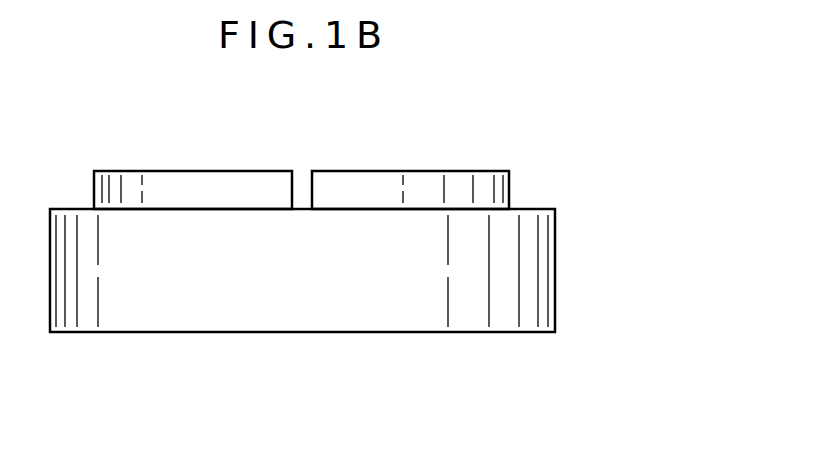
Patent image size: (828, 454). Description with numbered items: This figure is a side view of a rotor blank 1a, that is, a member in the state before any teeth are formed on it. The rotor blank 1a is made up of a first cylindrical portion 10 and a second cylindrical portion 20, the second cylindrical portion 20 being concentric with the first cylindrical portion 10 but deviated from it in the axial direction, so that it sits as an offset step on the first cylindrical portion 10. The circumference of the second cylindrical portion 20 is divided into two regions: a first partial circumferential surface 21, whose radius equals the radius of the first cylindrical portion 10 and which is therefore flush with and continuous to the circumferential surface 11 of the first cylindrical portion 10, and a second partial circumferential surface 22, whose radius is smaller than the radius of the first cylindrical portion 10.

The rotor blank 1a is at (606, 125).
The first cylindrical portion 10 is at (577, 279).
The circumferential surface 11 is at (502, 312).
The second cylindrical portion 20 is at (554, 192).
The first partial circumferential surface 21 is at (302, 188).
The second partial circumferential surface 22 is at (370, 187).